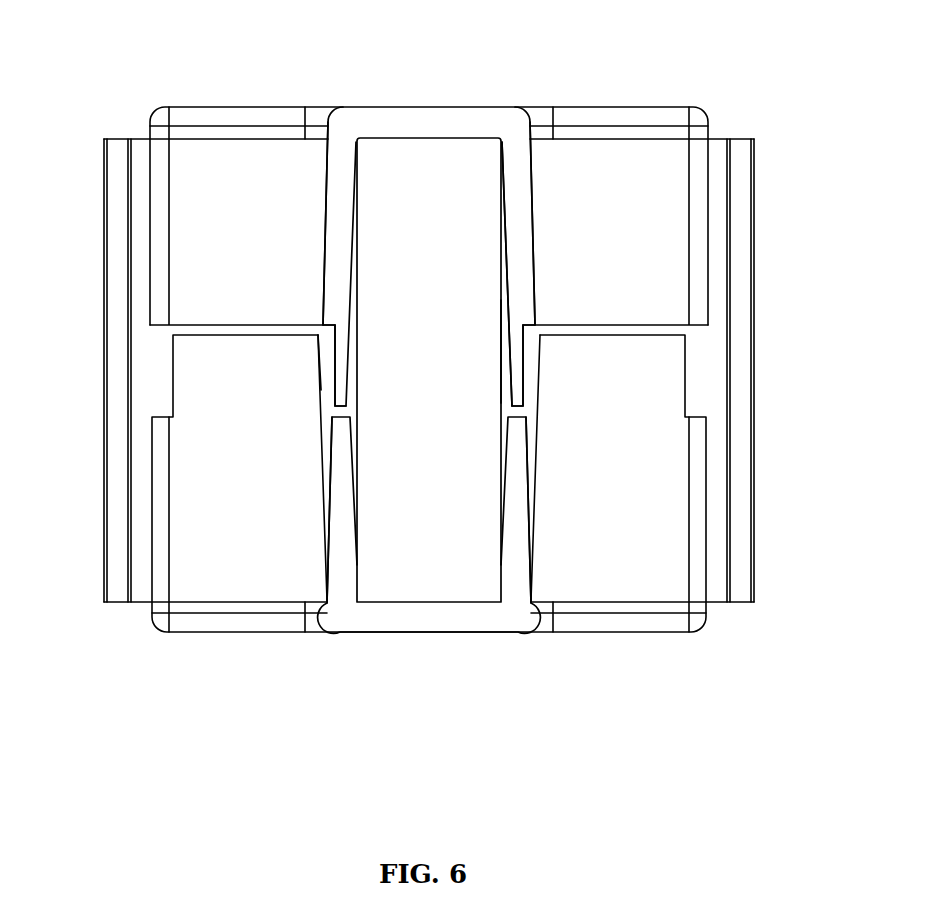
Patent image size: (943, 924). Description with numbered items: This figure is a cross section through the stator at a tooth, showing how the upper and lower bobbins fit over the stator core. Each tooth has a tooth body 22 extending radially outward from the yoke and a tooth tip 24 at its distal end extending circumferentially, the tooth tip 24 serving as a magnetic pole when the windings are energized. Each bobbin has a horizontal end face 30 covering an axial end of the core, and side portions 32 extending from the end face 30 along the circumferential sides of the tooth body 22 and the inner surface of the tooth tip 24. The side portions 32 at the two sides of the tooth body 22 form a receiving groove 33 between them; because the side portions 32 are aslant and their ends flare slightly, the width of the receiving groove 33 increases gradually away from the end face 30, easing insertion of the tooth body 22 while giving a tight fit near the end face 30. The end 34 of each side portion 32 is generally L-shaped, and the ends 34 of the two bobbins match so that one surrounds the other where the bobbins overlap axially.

The tooth body 22 is at (392, 220).
The tooth tip 24 is at (745, 352).
The end face 30 is at (426, 117).
The side portion 32 is at (340, 483).
The receiving groove 33 is at (502, 335).
The end of side portion 34 is at (320, 388).